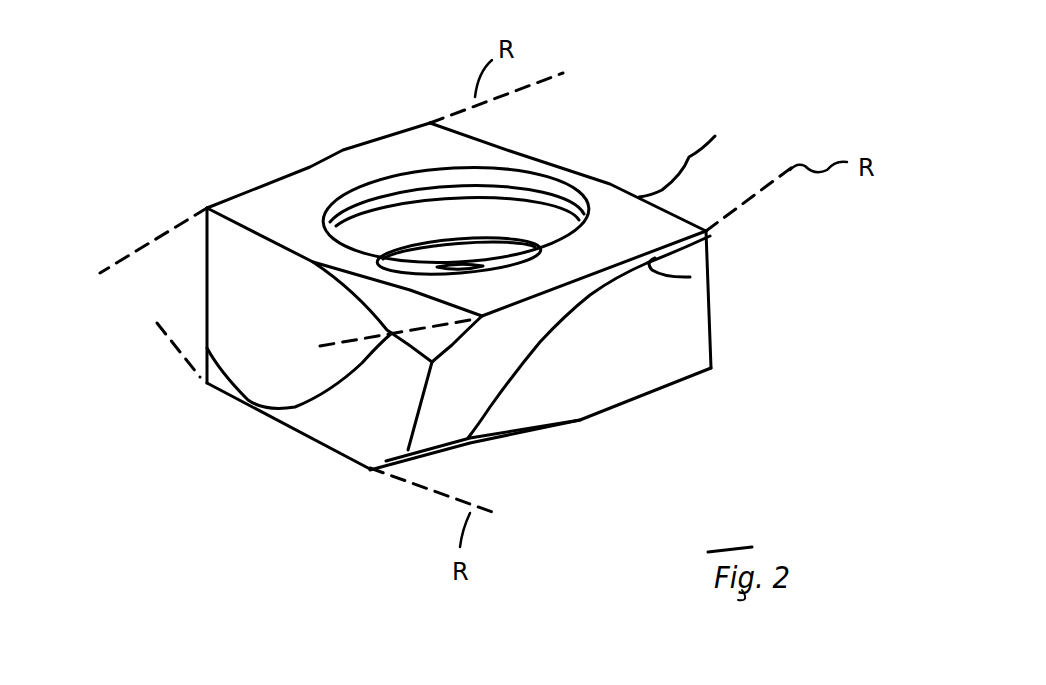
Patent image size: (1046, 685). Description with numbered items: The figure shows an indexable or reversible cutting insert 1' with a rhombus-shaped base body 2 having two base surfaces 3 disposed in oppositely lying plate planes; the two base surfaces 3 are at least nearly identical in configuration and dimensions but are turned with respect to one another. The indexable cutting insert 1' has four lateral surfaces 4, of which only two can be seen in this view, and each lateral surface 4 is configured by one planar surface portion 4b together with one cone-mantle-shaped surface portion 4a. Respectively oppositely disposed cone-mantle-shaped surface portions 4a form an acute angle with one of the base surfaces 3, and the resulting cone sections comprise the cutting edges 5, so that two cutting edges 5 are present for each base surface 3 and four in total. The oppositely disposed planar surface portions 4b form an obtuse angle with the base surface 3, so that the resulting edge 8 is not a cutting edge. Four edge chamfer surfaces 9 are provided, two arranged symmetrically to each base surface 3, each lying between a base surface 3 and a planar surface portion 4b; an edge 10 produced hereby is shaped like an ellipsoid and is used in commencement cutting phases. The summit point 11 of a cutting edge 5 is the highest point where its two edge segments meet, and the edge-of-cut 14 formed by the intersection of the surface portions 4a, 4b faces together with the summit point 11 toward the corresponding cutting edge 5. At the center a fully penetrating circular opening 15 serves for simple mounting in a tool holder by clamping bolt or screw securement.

The indexable cutting insert 1' is at (701, 128).
The base body 2 is at (425, 219).
The base surface 3 is at (530, 257).
The lateral surface 4 is at (460, 339).
The cone-mantle-shaped surface portion 4a is at (545, 426).
The planar surface portion 4b is at (427, 346).
The cutting edge 5 is at (494, 287).
The edge 8 is at (474, 308).
The edge chamfer surface 9 is at (516, 306).
The edge 10 is at (476, 436).
The summit point 11 is at (465, 356).
The edge-of-cut 14 is at (511, 337).
The circular opening 15 is at (499, 173).